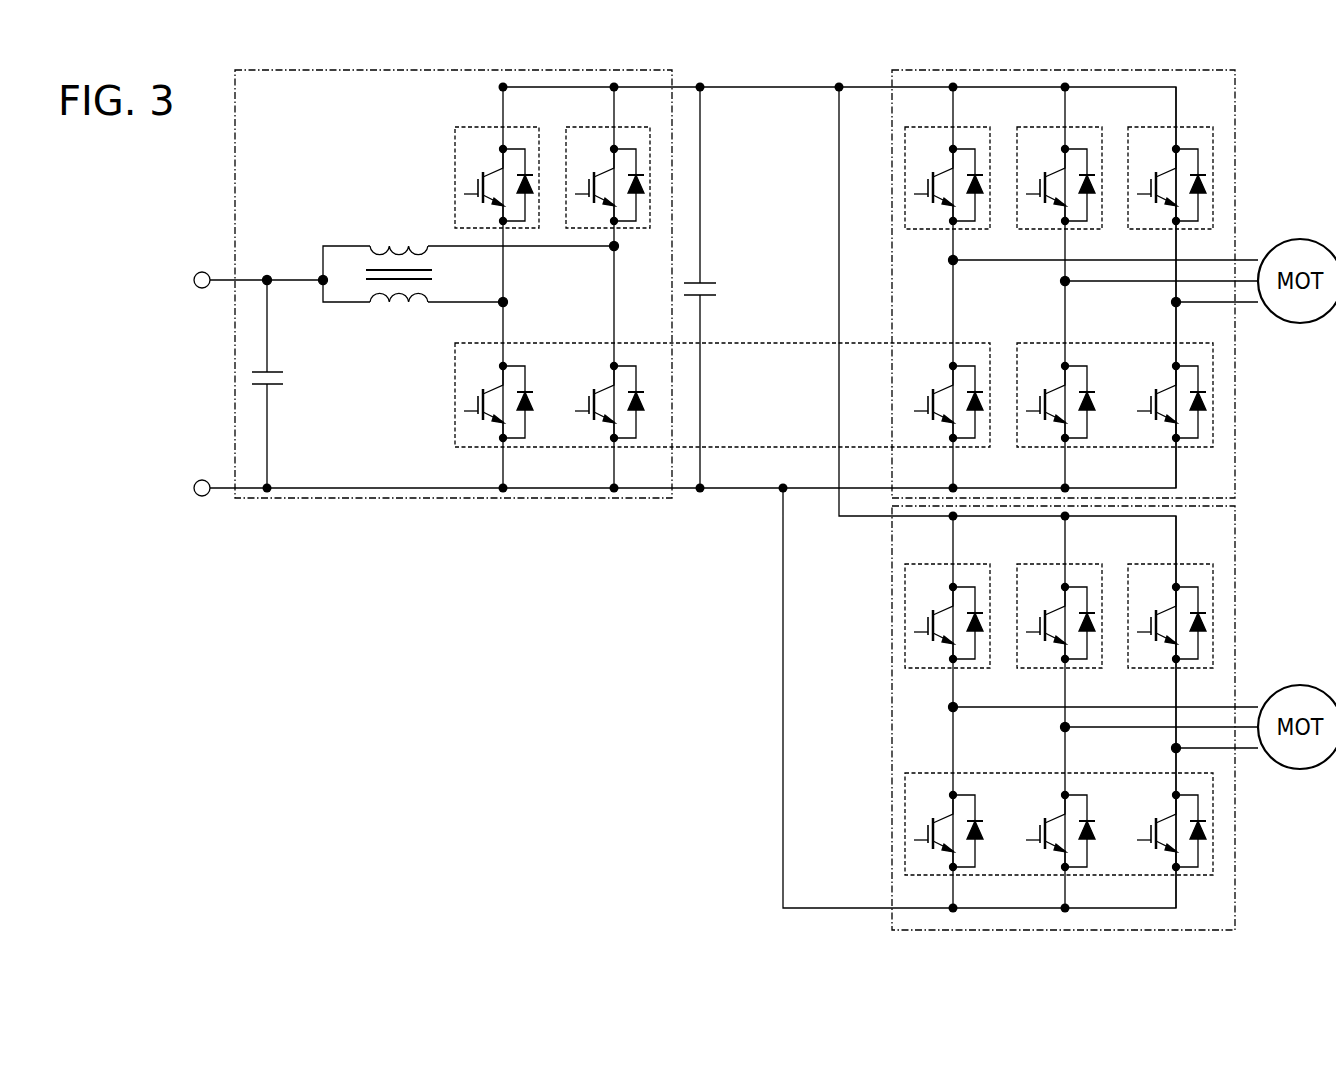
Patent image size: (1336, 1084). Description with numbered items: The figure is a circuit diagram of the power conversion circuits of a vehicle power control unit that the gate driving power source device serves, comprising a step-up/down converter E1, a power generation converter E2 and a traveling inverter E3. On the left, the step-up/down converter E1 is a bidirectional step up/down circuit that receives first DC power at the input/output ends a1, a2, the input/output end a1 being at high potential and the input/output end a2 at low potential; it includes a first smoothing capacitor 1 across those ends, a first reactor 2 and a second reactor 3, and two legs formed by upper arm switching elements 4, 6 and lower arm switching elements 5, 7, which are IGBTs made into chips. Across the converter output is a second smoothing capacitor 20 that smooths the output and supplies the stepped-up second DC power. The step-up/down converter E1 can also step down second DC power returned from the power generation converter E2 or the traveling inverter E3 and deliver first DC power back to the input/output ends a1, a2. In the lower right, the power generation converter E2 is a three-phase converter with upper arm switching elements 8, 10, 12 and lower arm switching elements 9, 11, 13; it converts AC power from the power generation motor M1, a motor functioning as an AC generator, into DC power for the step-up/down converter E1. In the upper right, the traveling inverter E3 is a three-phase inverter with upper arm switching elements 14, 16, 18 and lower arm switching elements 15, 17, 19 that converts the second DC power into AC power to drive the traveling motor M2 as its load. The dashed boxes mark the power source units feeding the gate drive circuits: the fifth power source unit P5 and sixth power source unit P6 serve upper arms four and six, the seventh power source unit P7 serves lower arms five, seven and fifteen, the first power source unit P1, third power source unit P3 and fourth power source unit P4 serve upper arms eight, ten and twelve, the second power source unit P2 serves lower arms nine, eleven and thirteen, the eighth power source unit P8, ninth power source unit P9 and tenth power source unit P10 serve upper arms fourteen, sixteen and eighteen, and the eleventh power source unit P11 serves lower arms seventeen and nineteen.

The first smoothing capacitor 1 is at (278, 386).
The first reactor 2 is at (392, 295).
The second reactor 3 is at (396, 264).
The upper arm switching element 4 is at (481, 188).
The lower arm switching element 5 is at (481, 405).
The upper arm switching element 6 is at (592, 188).
The lower arm switching element 7 is at (592, 405).
The upper arm switching element 8 is at (931, 626).
The lower arm switching element 9 is at (931, 834).
The upper arm switching element 10 is at (1043, 626).
The lower arm switching element 11 is at (1043, 834).
The upper arm switching element 12 is at (1154, 626).
The lower arm switching element 13 is at (1154, 834).
The upper arm switching element 14 is at (931, 188).
The lower arm switching element 15 is at (931, 405).
The upper arm switching element 16 is at (1043, 188).
The lower arm switching element 17 is at (1043, 405).
The upper arm switching element 18 is at (1154, 188).
The lower arm switching element 19 is at (1154, 405).
The second smoothing capacitor 20 is at (708, 282).
The first power source unit P1 is at (985, 564).
The second power source unit P2 is at (1050, 773).
The third power source unit P3 is at (1097, 564).
The fourth power source unit P4 is at (1208, 564).
The fifth power source unit P5 is at (535, 127).
The sixth power source unit P6 is at (646, 127).
The seventh power source unit P7 is at (818, 343).
The eighth power source unit P8 is at (985, 127).
The ninth power source unit P9 is at (1097, 127).
The tenth power source unit P10 is at (1209, 127).
The eleventh power source unit P11 is at (1162, 343).
The step-up/down converter E1 is at (640, 70).
The power generation converter E2 is at (1192, 930).
The traveling inverter E3 is at (1195, 70).
The power generation motor M1 is at (1284, 685).
The traveling motor M2 is at (1283, 240).
The input/output end a1 is at (199, 274).
The input/output end a2 is at (199, 482).